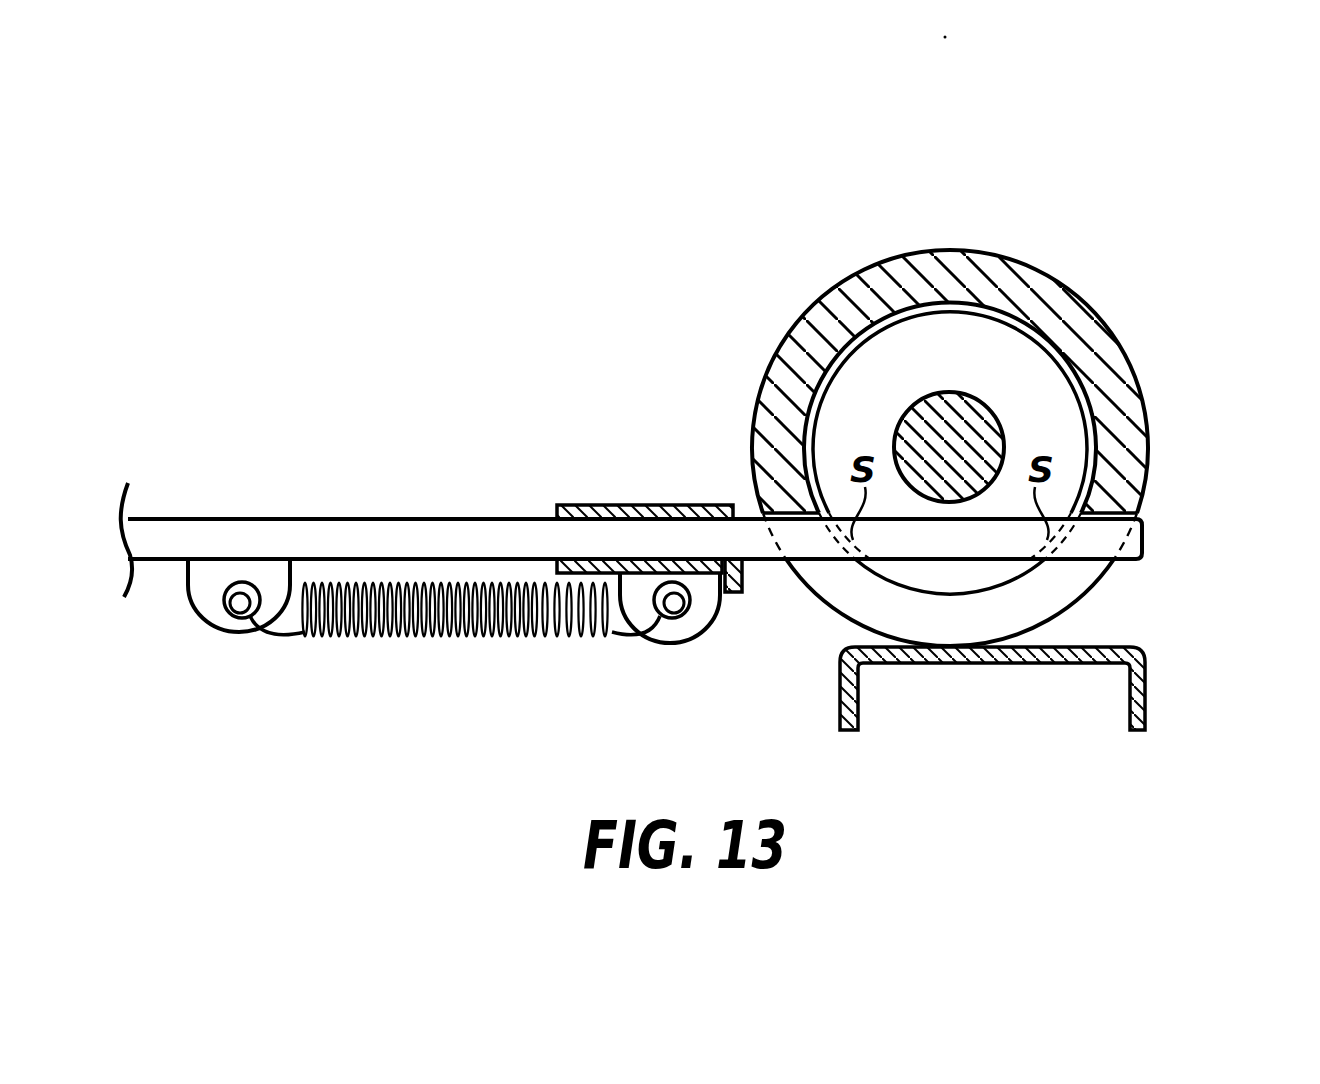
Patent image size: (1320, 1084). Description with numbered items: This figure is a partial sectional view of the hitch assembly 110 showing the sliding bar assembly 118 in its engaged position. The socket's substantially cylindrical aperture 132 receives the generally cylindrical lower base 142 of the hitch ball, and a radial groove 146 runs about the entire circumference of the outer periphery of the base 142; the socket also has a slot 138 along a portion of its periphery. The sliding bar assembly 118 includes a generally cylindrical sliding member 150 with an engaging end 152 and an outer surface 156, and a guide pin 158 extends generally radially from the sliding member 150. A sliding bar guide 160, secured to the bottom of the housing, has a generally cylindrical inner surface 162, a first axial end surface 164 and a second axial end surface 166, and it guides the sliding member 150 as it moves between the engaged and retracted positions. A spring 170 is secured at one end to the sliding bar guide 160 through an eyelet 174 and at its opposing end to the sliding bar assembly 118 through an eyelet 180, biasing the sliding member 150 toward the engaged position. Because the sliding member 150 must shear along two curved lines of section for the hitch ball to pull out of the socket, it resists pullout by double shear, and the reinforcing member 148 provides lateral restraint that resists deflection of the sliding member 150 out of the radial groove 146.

The hitch assembly 110 is at (1165, 180).
The sliding bar assembly 118 is at (687, 527).
The aperture 132 is at (1027, 342).
The slot 138 is at (957, 618).
The lower base 142 is at (946, 386).
The radial groove 146 is at (885, 385).
The reinforcing member 148 is at (1146, 712).
The sliding member 150 is at (210, 532).
The engaging end 152 is at (1146, 528).
The outer surface 156 is at (165, 572).
The guide pin 158 is at (742, 600).
The sliding bar guide 160 is at (712, 505).
The inner surface 162 is at (586, 529).
The first axial end surface 164 is at (767, 511).
The second axial end surface 166 is at (549, 512).
The spring 170 is at (403, 640).
The eyelet 174 is at (688, 645).
The eyelet 180 is at (223, 617).